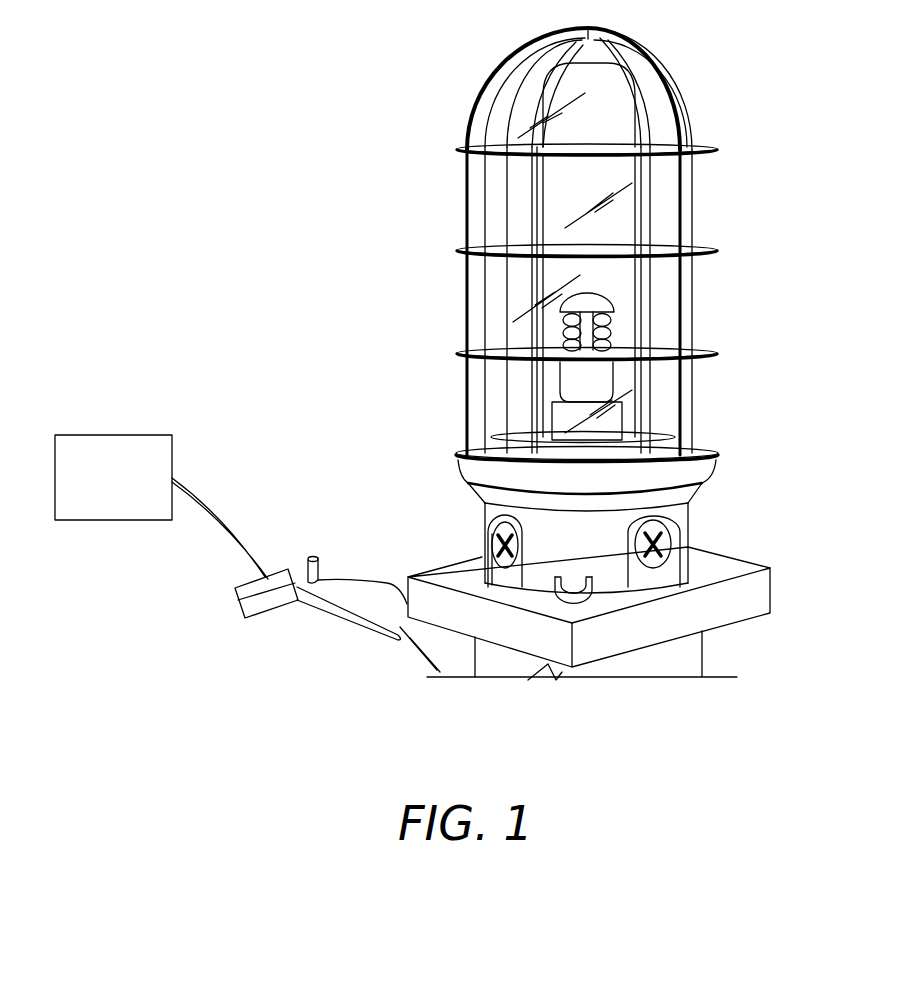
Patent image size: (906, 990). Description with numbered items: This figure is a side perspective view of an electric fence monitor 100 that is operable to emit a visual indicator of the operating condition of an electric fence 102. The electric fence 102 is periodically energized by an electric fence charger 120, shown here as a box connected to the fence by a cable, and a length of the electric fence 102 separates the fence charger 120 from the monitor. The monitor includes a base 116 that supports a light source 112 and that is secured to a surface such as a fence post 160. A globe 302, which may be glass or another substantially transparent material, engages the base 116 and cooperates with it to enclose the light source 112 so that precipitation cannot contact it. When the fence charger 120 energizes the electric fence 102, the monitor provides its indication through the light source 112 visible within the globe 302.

The electric fence monitor 100 is at (508, 29).
The globe 302 is at (680, 130).
The light source 112 is at (613, 327).
The base 116 is at (603, 555).
The fence post 160 is at (550, 645).
The electric fence charger 120 is at (112, 435).
The electric fence 102 is at (243, 547).